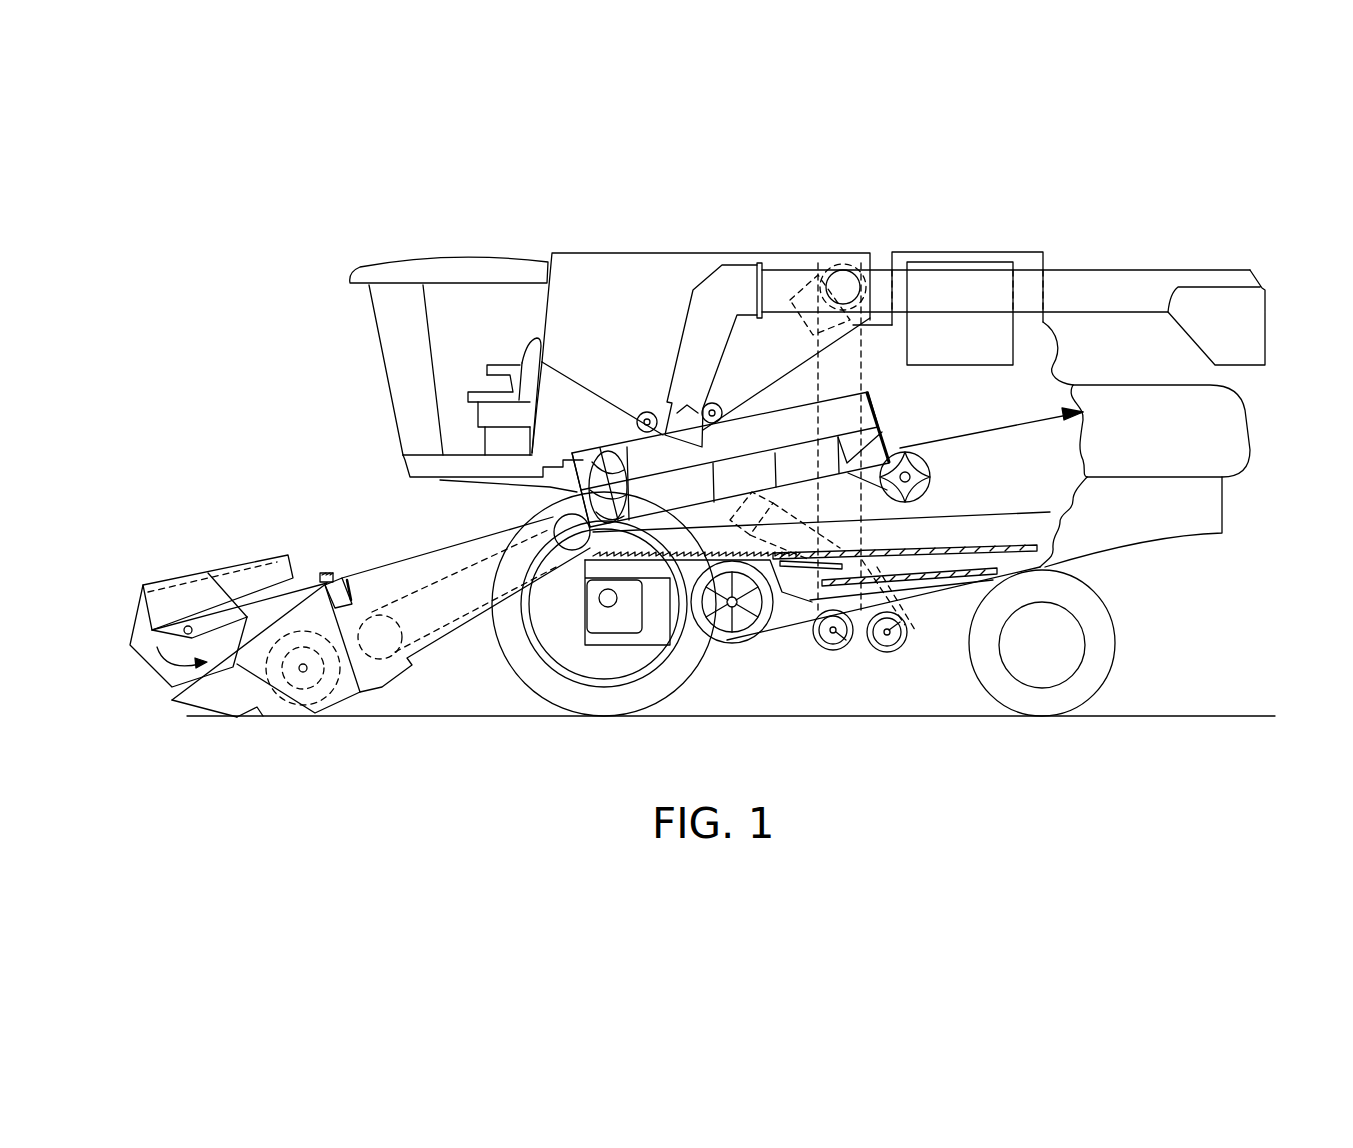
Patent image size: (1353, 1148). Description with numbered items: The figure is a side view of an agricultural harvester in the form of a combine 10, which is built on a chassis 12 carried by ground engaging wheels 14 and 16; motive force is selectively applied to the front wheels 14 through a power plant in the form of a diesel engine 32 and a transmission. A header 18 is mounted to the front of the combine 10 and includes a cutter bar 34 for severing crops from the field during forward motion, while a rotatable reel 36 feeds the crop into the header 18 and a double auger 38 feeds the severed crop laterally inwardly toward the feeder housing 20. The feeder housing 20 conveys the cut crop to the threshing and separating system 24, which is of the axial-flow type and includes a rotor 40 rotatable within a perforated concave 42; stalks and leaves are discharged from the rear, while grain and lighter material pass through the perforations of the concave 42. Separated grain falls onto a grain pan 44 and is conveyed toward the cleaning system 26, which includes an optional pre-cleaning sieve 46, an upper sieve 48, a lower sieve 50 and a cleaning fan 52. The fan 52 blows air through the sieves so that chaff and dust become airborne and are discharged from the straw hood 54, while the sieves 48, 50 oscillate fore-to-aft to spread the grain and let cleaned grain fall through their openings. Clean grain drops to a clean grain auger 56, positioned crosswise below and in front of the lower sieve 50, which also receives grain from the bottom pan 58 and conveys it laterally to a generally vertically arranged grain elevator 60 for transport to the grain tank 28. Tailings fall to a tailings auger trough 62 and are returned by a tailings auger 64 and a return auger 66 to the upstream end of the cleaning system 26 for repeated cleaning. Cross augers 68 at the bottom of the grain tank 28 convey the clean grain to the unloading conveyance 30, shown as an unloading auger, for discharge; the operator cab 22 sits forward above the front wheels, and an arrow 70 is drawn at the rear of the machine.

The combine 10 is at (445, 252).
The chassis 12 is at (1047, 565).
The front wheels 14 is at (515, 675).
The ground engaging wheels 16 is at (1115, 657).
The header 18 is at (228, 554).
The feeder housing 20 is at (418, 557).
The operator cab 22 is at (385, 347).
The threshing and separating system 24 is at (523, 497).
The cleaning system 26 is at (793, 653).
The grain tank 28 is at (587, 263).
The unloading conveyance 30 is at (1125, 280).
The diesel engine 32 is at (948, 262).
The cutter bar 34 is at (237, 717).
The rotatable reel 36 is at (138, 612).
The double auger 38 is at (303, 690).
The rotor 40 is at (591, 452).
The perforated concave 42 is at (767, 442).
The grain pan 44 is at (592, 560).
The pre-cleaning sieve 46 is at (880, 552).
The upper sieve 48 is at (957, 549).
The lower sieve 50 is at (933, 577).
The cleaning fan 52 is at (735, 645).
The straw hood 54 is at (1230, 425).
The clean grain auger 56 is at (838, 650).
The bottom pan 58 is at (982, 568).
The grain elevator 60 is at (863, 370).
The tailings auger trough 62 is at (997, 573).
The tailings auger 64 is at (887, 650).
The return auger 66 is at (810, 538).
The cross augers 68 is at (645, 410).
The rearward direction arrow 70 is at (1193, 547).